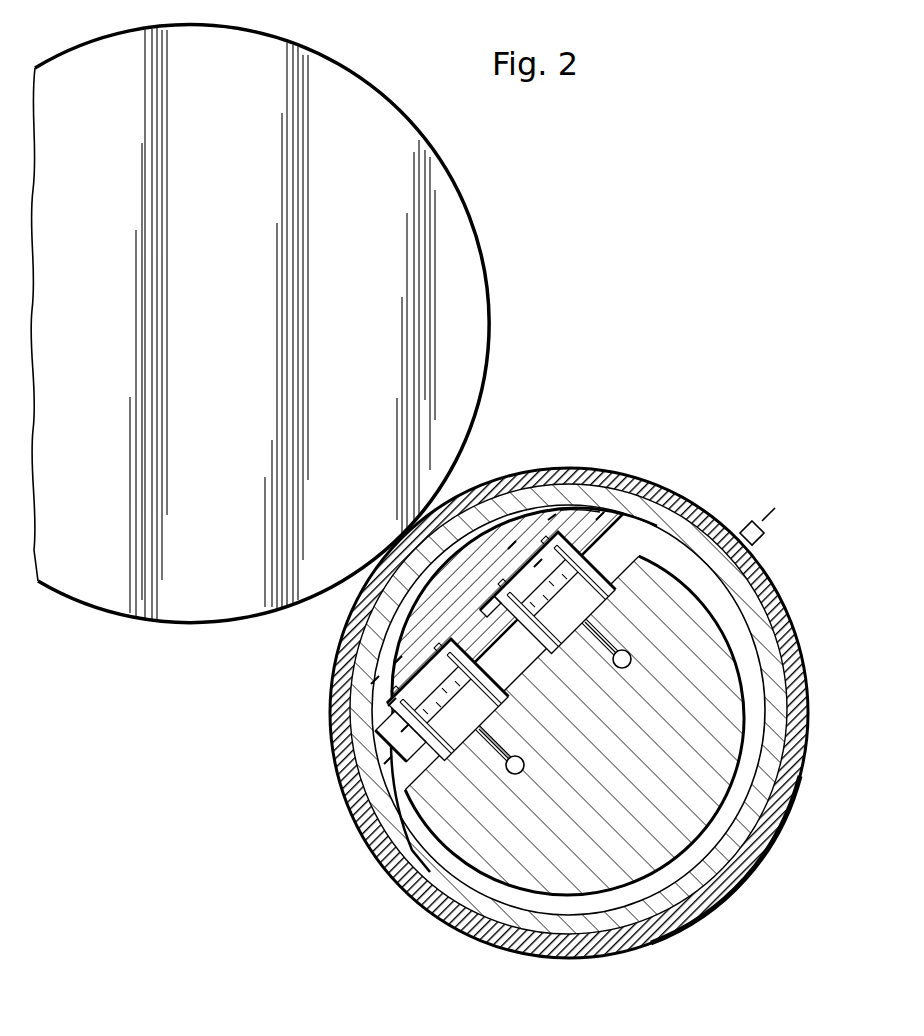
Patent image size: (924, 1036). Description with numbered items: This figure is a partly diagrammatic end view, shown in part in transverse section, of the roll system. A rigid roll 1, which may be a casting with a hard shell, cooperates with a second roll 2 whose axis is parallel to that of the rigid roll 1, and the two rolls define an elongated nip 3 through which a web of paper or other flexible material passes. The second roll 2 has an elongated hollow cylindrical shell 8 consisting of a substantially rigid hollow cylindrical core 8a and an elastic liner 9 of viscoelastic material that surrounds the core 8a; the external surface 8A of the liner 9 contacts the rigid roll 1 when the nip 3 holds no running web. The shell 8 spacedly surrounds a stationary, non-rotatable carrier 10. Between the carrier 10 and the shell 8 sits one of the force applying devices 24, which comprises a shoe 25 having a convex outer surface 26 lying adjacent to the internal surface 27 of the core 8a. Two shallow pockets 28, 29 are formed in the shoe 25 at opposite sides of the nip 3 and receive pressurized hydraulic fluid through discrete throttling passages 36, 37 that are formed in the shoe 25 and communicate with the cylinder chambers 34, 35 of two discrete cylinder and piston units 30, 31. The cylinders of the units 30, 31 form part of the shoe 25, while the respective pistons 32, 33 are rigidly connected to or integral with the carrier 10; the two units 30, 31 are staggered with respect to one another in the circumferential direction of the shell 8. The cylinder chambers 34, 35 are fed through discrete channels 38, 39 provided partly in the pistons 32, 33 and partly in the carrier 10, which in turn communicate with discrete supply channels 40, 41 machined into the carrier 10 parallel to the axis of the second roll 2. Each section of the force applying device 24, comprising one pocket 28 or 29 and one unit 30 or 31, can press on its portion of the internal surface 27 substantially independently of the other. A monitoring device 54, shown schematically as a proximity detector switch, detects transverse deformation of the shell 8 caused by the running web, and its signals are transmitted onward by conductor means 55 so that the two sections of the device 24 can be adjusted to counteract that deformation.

The rigid roll 1 is at (180, 623).
The second roll 2 is at (376, 858).
The nip 3 is at (360, 582).
The shell 8 is at (590, 957).
The core 8a is at (480, 912).
The external surface 8A is at (698, 918).
The elastic liner 9 is at (528, 945).
The carrier 10 is at (706, 632).
The force applying device 24 is at (579, 504).
The shoe 25 is at (470, 560).
The convex outer surface 26 is at (405, 728).
The internal surface 27 is at (658, 530).
The pocket 28 is at (375, 680).
The pocket 29 is at (552, 518).
The cylinder and piston unit 30 is at (388, 760).
The cylinder and piston unit 31 is at (600, 516).
The piston 32 is at (458, 736).
The piston 33 is at (582, 602).
The cylinder chamber 34 is at (392, 702).
The cylinder chamber 35 is at (538, 563).
The throttling passage 36 is at (398, 660).
The throttling passage 37 is at (512, 545).
The channel 38 is at (500, 742).
The channel 39 is at (601, 643).
The supply channel 40 is at (516, 776).
The supply channel 41 is at (630, 667).
The monitoring device 54 is at (748, 526).
The conductor means 55 is at (775, 508).